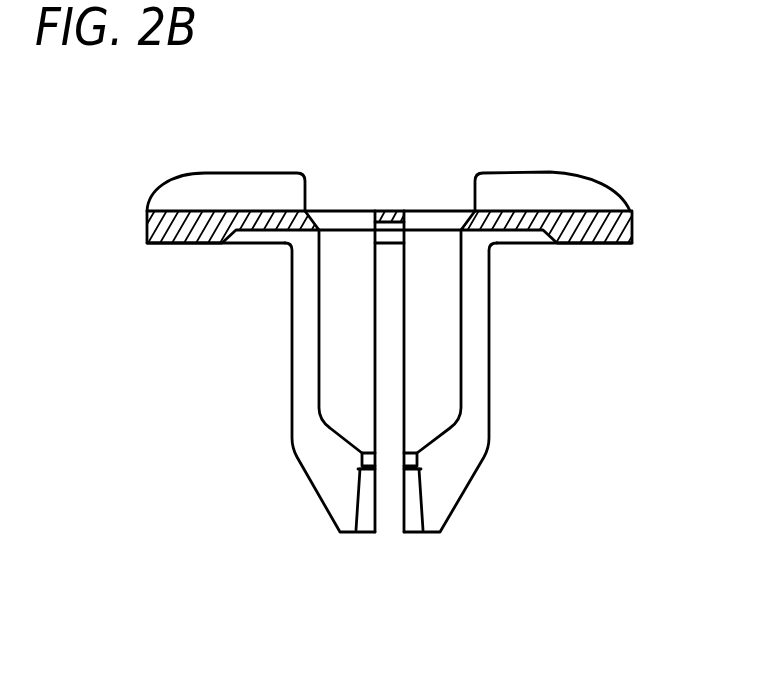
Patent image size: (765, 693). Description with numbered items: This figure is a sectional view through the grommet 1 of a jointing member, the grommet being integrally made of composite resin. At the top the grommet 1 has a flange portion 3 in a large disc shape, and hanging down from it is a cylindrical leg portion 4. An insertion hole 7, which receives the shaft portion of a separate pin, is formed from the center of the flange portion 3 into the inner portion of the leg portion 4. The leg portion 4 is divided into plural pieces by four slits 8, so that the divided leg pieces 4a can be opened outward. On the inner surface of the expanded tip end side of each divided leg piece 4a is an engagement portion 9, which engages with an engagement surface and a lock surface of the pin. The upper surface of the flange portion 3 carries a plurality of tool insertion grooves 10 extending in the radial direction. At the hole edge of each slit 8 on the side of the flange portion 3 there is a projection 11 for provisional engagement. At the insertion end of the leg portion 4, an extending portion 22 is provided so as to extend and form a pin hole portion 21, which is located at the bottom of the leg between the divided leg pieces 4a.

The grommet 1 is at (628, 505).
The flange portion 3 is at (562, 172).
The leg portion 4 is at (491, 284).
The divided leg piece 4a is at (302, 372).
The insertion hole 7 is at (347, 244).
The slit 8 is at (302, 313).
The engagement portion 9 is at (357, 455).
The tool insertion groove 10 is at (622, 209).
The projection for provisional engagement 11 is at (318, 211).
The pin hole portion 21 is at (387, 522).
The extending portion 22 is at (336, 514).